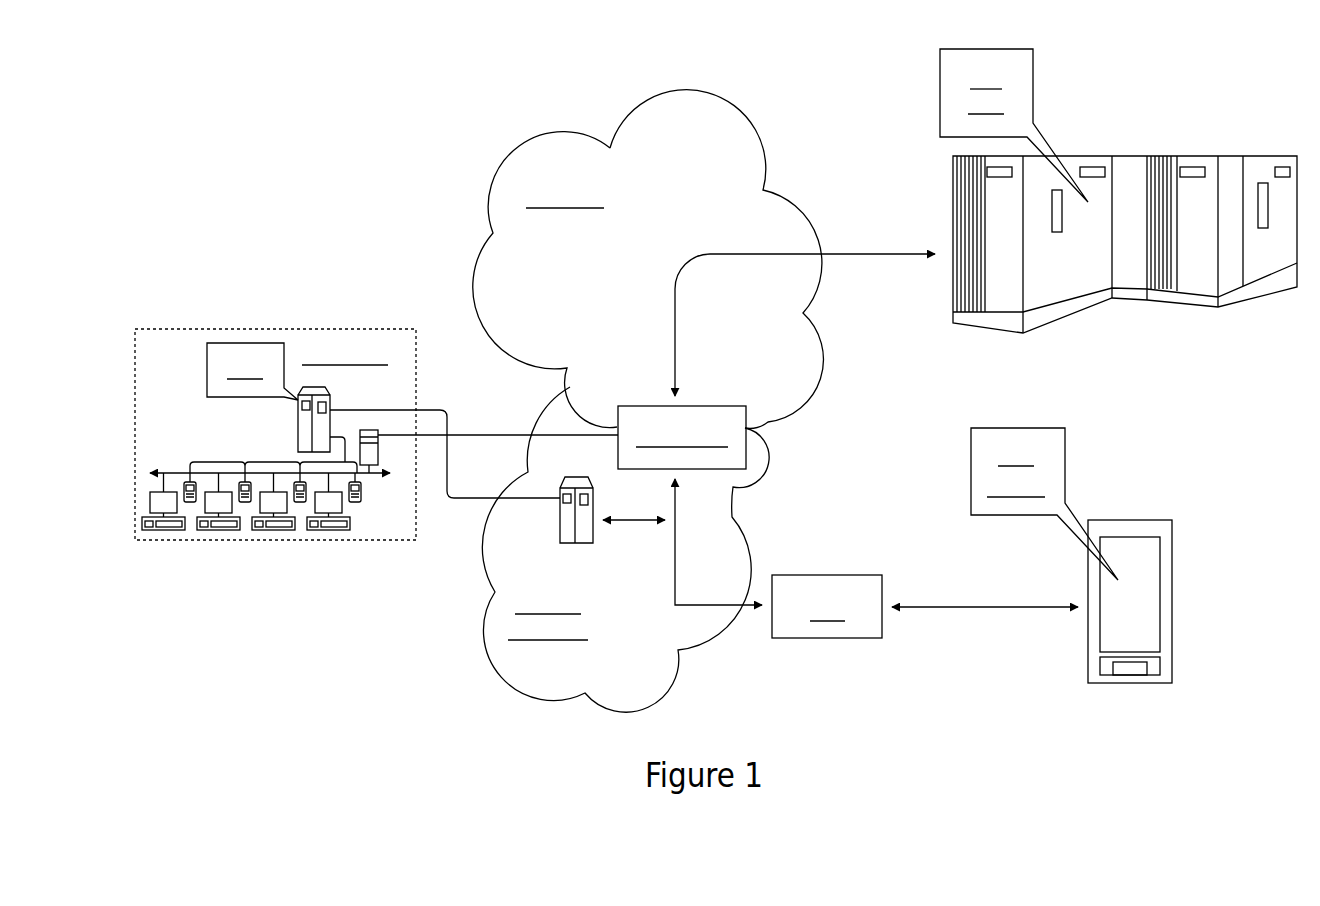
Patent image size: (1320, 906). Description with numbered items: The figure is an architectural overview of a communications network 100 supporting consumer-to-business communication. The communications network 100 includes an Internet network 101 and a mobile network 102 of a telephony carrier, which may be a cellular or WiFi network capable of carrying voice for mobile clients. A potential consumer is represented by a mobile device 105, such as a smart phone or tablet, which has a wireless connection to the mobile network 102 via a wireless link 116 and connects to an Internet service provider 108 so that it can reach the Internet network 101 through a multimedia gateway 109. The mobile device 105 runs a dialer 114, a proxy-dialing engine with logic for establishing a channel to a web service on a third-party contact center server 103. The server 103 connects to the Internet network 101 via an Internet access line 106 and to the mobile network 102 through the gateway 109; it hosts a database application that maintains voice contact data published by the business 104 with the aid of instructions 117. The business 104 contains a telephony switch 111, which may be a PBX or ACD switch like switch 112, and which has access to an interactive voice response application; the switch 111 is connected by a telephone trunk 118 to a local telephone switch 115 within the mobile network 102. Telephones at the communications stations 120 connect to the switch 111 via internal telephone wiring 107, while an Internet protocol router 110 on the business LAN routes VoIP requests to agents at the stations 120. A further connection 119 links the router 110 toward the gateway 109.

The communications network 100 is at (392, 182).
The Internet network 101 is at (625, 123).
The mobile network 102 is at (513, 697).
The contact center server 103 is at (935, 215).
The business 104 is at (233, 310).
The mobile device 105 is at (1172, 598).
The Internet access line 106 is at (668, 316).
The internal telephone wiring 107 is at (281, 518).
The Internet service provider 108 is at (882, 625).
The multimedia gateway 109 is at (746, 453).
The Internet protocol router 110 is at (365, 430).
The telephony switch 111 is at (298, 438).
The switch 112 is at (258, 343).
The dialer 114 is at (1015, 428).
The local telephone switch 115 is at (560, 520).
The wireless link 116 is at (940, 605).
The instructions 117 is at (1033, 82).
The telephone trunk 118 is at (485, 500).
The connection between network device and gateway 119 is at (512, 435).
The communications stations 120 is at (372, 526).